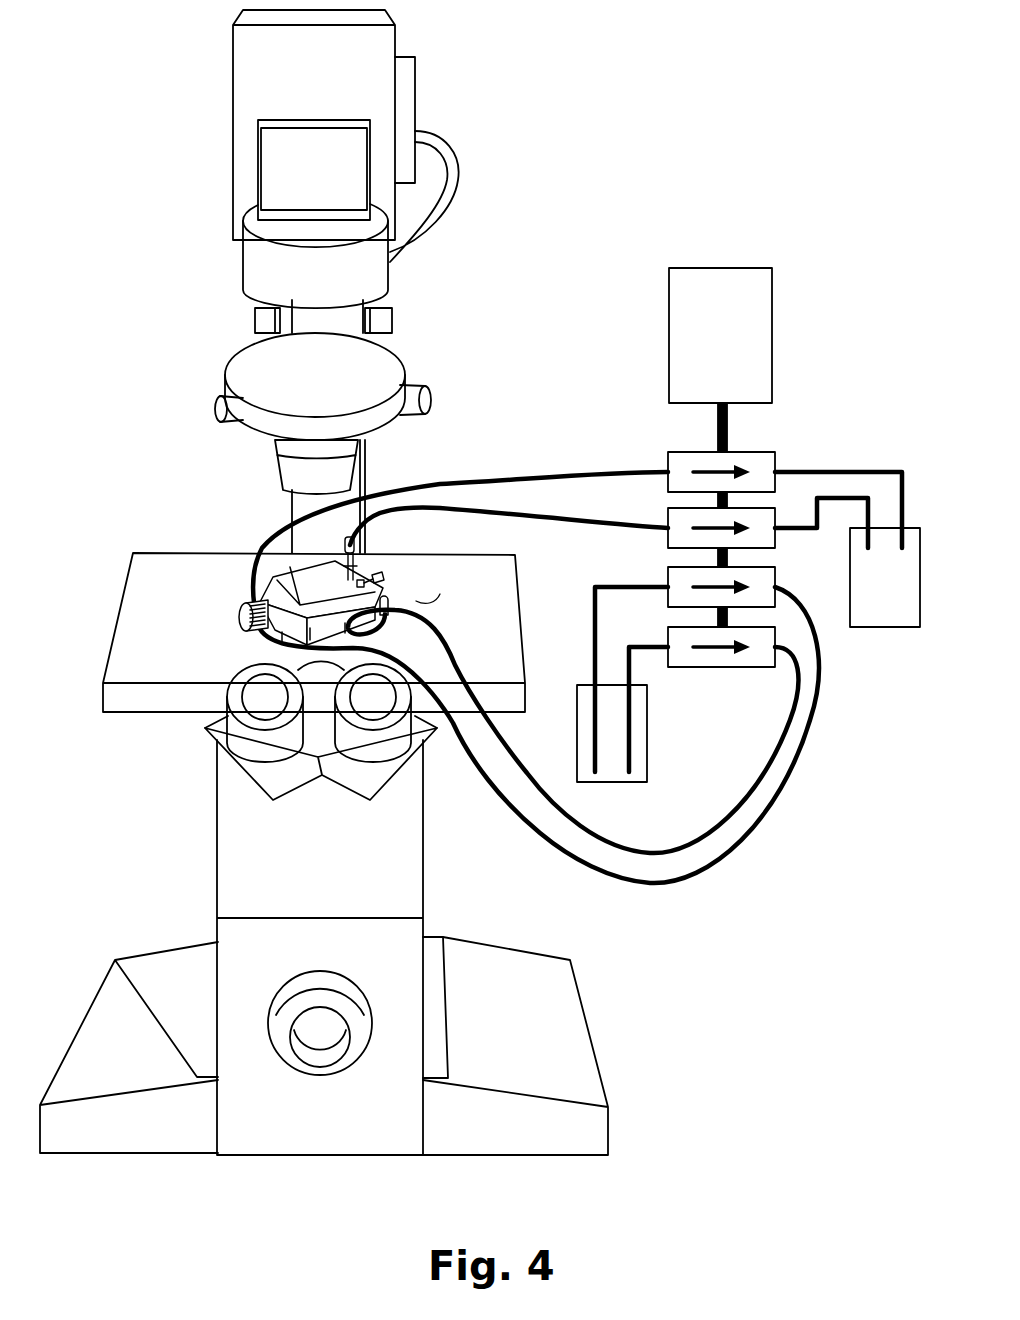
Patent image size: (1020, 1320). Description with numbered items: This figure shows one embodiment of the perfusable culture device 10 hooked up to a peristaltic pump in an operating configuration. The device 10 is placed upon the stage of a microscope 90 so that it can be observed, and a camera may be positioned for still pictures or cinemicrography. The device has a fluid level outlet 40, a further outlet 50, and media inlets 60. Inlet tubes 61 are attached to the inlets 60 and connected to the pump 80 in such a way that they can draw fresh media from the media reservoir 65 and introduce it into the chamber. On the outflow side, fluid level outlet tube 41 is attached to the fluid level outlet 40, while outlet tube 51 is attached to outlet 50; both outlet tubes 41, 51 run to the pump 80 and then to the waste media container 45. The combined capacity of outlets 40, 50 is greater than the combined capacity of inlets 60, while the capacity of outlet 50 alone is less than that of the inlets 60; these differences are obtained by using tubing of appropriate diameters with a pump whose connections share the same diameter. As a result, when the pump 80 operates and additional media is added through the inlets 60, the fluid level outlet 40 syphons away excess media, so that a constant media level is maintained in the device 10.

The perfusable culture device 10 is at (307, 561).
The fluid level outlet 40 is at (357, 547).
The fluid level outlet tube 41 is at (556, 523).
The waste media container 45 is at (880, 628).
The outlet 50 is at (292, 578).
The outlet tube 51 is at (494, 478).
The inlets 60 is at (418, 603).
The inlet tubes 61 is at (565, 830).
The media reservoir 65 is at (648, 735).
The pump 80 is at (752, 238).
The microscope 90 is at (150, 792).